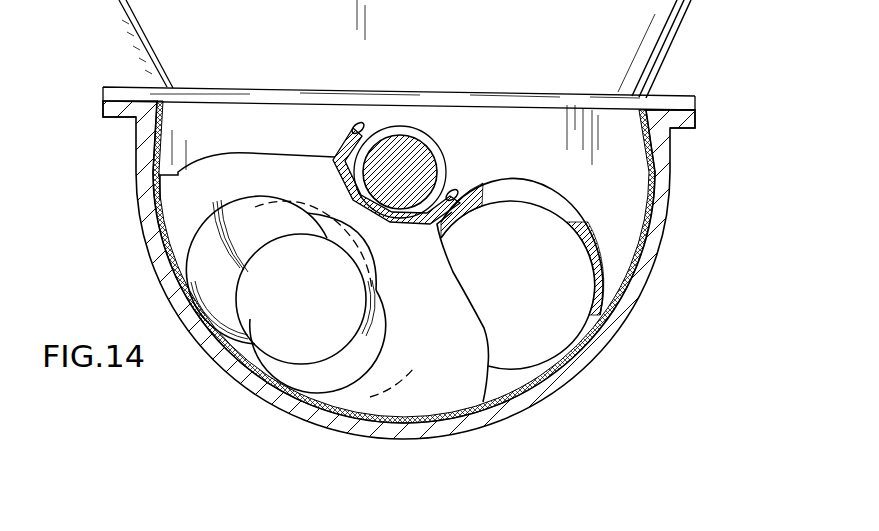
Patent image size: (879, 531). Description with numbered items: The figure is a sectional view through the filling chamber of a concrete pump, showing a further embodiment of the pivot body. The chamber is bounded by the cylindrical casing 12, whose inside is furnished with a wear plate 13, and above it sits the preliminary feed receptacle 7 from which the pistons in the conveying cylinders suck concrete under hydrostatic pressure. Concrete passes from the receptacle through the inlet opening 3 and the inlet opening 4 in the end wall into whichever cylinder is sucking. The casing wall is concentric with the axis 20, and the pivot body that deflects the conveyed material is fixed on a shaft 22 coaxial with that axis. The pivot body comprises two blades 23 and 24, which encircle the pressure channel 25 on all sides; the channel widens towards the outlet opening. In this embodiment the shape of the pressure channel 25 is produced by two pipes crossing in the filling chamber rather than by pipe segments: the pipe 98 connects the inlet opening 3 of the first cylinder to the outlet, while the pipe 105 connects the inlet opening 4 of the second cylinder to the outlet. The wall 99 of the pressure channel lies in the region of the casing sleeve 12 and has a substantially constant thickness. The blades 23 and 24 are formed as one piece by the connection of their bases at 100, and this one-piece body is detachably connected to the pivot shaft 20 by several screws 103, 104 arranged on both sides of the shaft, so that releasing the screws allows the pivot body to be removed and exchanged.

The inlet opening 3 is at (580, 226).
The inlet opening 4 is at (336, 336).
The preliminary feed receptacle 7 is at (622, 58).
The cylindrical casing 12 is at (652, 238).
The wear plate 13 is at (655, 172).
The axis 20 is at (400, 172).
The shaft 22 is at (402, 126).
The blade 23 is at (495, 322).
The blade 24 is at (222, 144).
The pressure channel 25 is at (253, 322).
The pipe 98 is at (188, 258).
The wall 99 is at (190, 307).
The connection of blade bases 100 is at (338, 261).
The screw 103 is at (356, 125).
The screw 104 is at (456, 192).
The pipe 105 is at (414, 368).